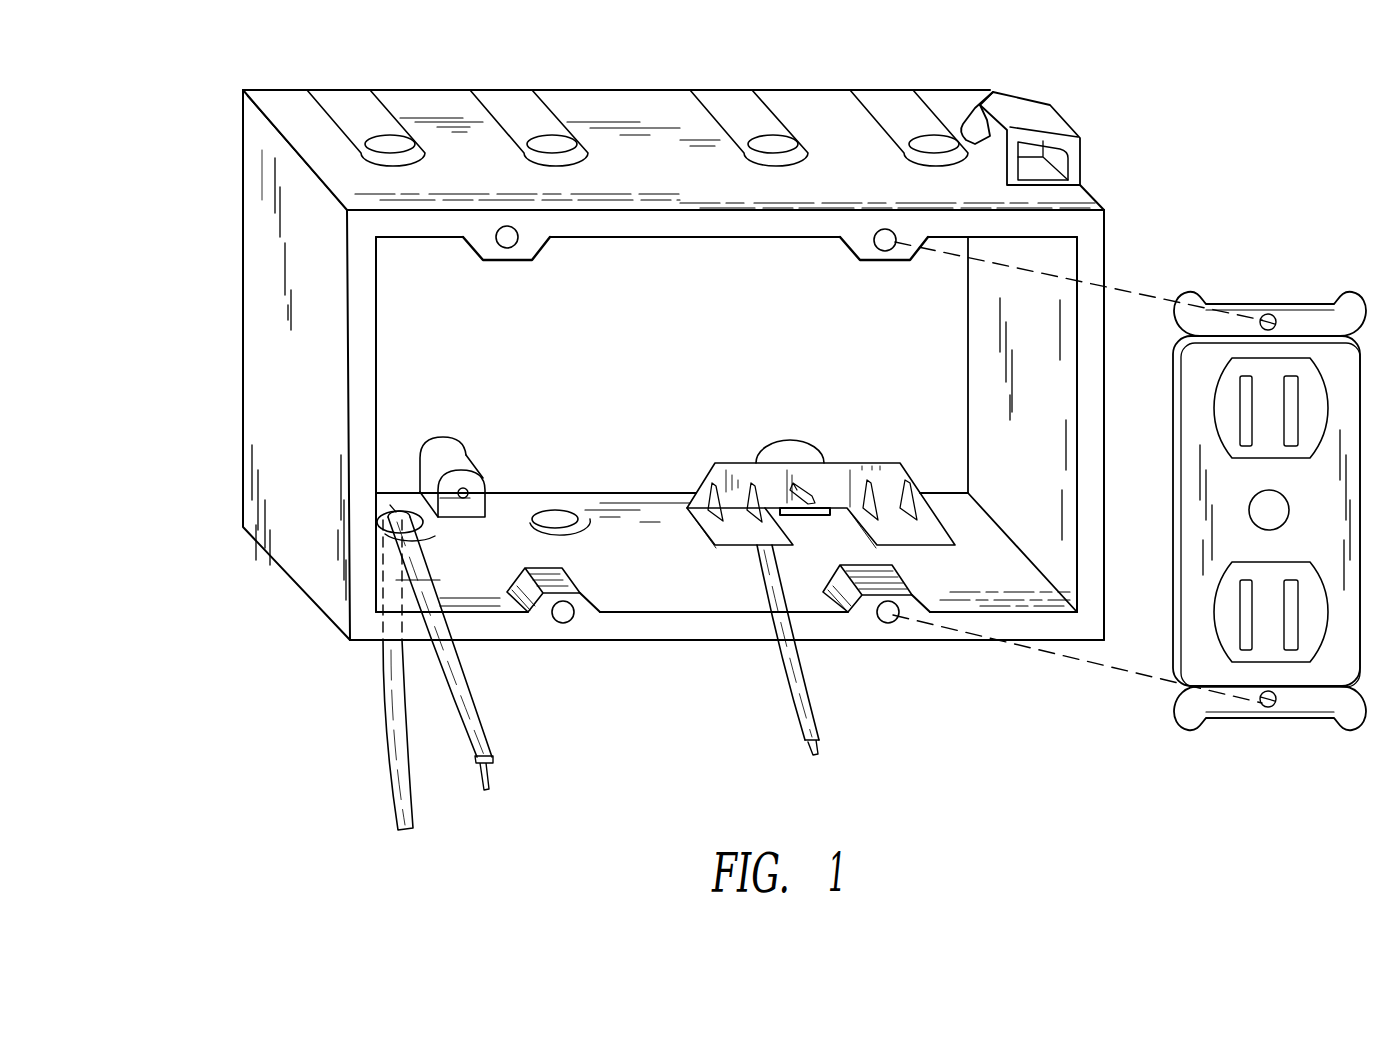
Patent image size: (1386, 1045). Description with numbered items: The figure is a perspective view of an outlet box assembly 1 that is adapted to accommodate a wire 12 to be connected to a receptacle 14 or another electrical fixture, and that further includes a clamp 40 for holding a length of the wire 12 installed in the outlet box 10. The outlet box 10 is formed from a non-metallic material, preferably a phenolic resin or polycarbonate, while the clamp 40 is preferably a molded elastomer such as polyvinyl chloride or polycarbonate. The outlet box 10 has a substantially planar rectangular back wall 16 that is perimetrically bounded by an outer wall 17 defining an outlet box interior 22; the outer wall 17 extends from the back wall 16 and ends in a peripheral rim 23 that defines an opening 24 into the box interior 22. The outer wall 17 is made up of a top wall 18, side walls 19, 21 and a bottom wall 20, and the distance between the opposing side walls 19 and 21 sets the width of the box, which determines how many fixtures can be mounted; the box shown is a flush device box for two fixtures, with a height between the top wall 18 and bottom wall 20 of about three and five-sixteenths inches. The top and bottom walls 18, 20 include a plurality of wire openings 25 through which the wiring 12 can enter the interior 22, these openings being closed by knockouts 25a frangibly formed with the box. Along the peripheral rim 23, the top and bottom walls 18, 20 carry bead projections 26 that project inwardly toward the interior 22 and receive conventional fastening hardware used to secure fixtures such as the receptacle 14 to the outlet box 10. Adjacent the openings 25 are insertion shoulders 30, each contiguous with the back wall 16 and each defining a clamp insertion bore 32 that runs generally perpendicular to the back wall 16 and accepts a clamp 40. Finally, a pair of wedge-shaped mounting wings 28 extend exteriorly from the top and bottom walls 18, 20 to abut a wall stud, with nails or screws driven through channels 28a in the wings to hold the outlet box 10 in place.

The outlet box assembly 1 is at (310, 742).
The outlet box 10 is at (243, 140).
The wire 12 is at (393, 807).
The receptacle 14 is at (1290, 306).
The back wall 16 is at (527, 360).
The outer wall 17 is at (269, 290).
The top wall 18 is at (632, 112).
The side wall 19 is at (280, 365).
The bottom wall 20 is at (623, 585).
The side wall 21 is at (1104, 394).
The outlet box interior 22 is at (400, 430).
The peripheral rim 23 is at (1090, 262).
The opening 24 is at (407, 368).
The wire openings 25 is at (387, 512).
The knockouts 25a is at (915, 143).
The bead projections 26 is at (525, 247).
The mounting wings 28 is at (1080, 140).
The channels 28a is at (978, 130).
The insertion shoulders 30 is at (450, 453).
The clamp insertion bore 32 is at (464, 492).
The clamp 40 is at (720, 532).